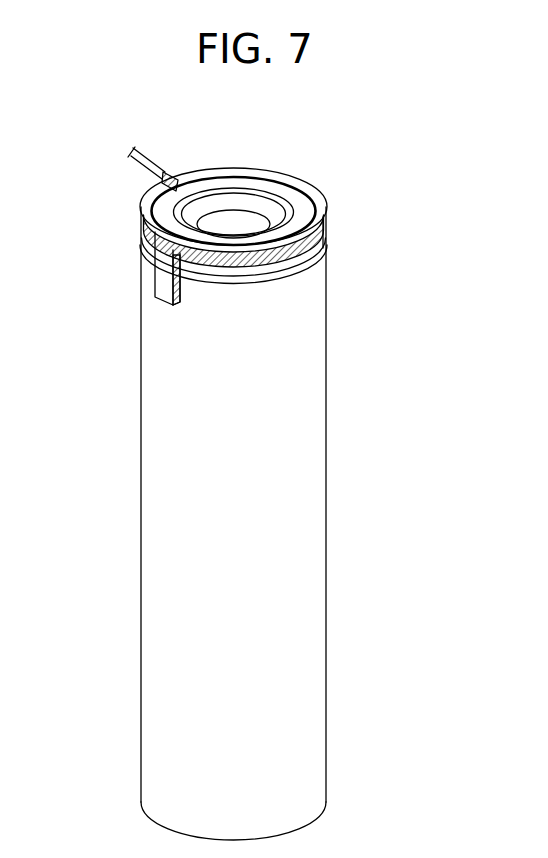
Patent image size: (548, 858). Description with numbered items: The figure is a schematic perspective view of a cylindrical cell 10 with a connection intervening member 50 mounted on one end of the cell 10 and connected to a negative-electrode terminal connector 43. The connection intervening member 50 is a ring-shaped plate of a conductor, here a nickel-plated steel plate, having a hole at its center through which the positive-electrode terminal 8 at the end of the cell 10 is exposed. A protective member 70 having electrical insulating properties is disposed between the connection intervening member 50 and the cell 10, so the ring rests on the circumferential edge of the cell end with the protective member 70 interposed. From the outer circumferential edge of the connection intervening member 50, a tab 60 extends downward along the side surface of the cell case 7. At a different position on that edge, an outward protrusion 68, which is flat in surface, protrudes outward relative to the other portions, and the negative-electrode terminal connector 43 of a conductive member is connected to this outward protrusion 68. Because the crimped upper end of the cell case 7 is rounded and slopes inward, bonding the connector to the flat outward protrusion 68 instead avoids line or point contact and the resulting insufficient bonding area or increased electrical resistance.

The cell 10 is at (248, 470).
The cell case 7 is at (158, 405).
The connection intervening member 50 is at (320, 207).
The protective member 70 is at (300, 215).
The positive-electrode terminal 8 is at (233, 217).
The tab 60 is at (165, 279).
The outward protrusion 68 is at (150, 178).
The negative-electrode terminal connector 43 is at (175, 175).